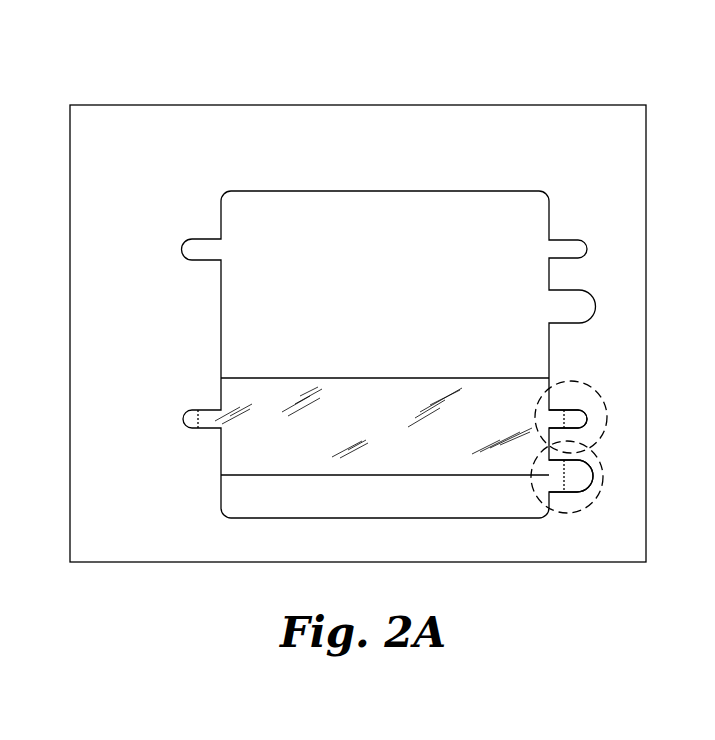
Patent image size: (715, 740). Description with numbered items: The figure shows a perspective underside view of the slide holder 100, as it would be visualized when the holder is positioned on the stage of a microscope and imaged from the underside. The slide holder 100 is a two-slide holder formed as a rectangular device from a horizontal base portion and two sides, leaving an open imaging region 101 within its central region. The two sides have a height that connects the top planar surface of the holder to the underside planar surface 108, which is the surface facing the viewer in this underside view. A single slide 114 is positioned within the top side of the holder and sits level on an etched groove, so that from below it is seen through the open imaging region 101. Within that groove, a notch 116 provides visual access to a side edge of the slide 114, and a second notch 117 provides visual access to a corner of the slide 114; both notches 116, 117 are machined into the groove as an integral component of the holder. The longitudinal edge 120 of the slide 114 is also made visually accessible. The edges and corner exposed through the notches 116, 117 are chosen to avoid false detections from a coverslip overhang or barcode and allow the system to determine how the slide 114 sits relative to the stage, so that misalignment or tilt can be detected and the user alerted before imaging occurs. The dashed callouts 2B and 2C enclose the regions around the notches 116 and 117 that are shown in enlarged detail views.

The slide holder 100 is at (568, 75).
The open imaging region 101 is at (322, 268).
The underside planar surface 108 is at (123, 550).
The slide 114 is at (367, 473).
The notch 116 is at (580, 420).
The notch 117 is at (580, 478).
The longitudinal edge 120 is at (398, 377).
The detail view 2B callout 2B is at (592, 390).
The detail view 2C callout 2C is at (592, 503).